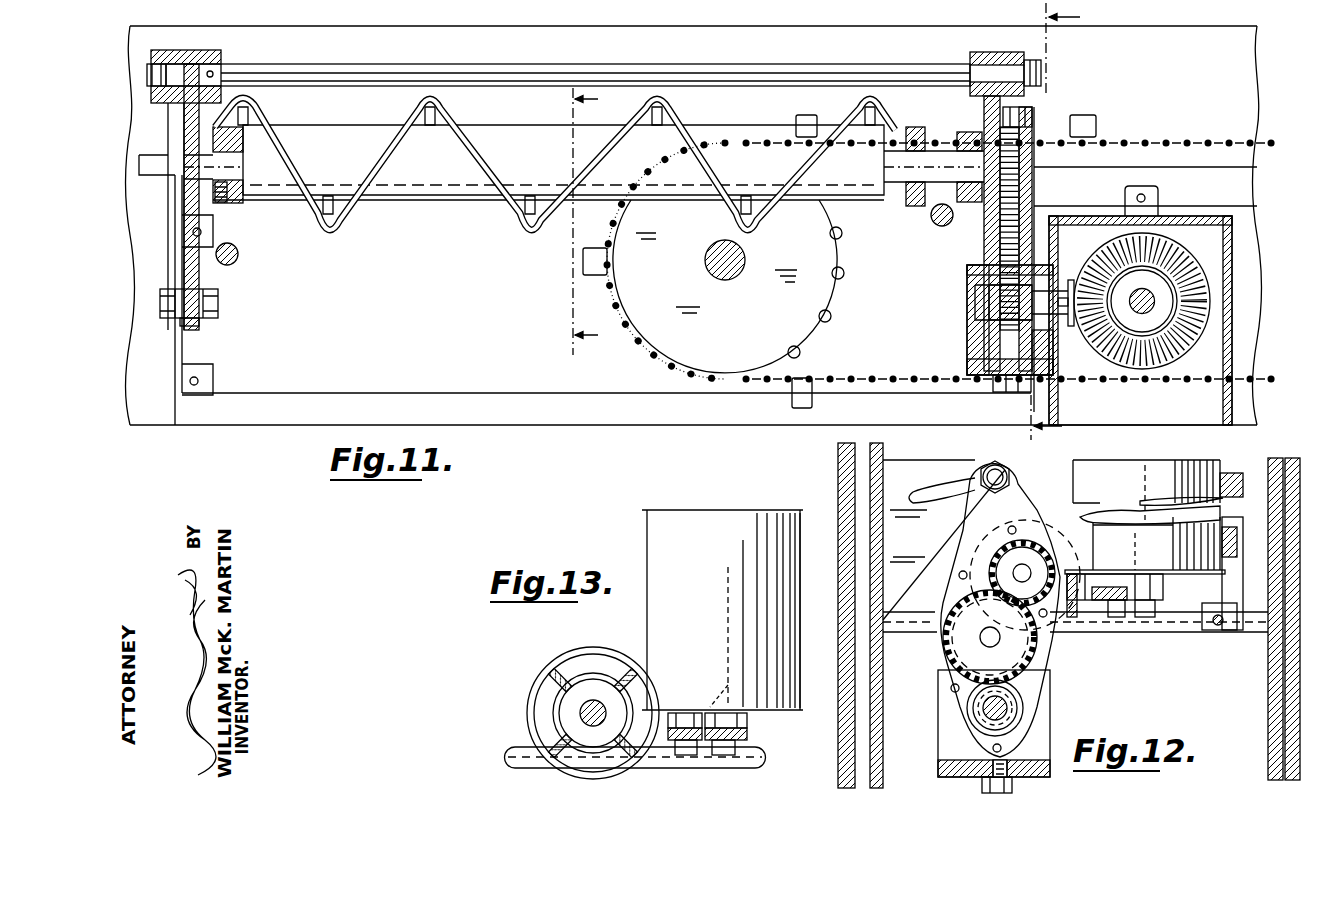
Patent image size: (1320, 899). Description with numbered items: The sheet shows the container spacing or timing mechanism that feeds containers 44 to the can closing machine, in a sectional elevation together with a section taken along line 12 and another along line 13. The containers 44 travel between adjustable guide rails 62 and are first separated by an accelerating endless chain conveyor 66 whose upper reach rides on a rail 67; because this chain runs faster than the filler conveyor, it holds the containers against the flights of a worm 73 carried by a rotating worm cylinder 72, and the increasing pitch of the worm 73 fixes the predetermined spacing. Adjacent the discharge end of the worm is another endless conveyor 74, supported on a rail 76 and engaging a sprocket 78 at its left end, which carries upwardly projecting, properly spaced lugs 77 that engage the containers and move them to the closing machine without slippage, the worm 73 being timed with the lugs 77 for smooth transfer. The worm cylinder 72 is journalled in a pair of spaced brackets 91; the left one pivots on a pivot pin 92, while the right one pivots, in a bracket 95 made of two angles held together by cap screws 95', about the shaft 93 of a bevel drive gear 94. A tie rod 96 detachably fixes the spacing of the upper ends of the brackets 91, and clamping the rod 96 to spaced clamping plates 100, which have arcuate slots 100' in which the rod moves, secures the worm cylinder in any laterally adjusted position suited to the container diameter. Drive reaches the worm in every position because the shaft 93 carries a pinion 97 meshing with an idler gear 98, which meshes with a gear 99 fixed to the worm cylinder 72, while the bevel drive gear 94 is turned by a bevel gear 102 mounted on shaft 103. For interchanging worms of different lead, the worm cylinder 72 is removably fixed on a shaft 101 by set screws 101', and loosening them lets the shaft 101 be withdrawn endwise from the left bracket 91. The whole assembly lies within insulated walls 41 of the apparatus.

In FIG. 11, the section line 12— 12 is at (1072, 223).
In FIG. 11, the section line 13— 13 is at (601, 224).
In FIG. 13, the insulated walls 41 is at (800, 667).
In FIG. 12, the insulated walls 41 is at (852, 660).
In FIG. 13, the containers 44 is at (712, 605).
In FIG. 12, the containers 44 is at (1148, 515).
In FIG. 12, the guide rails 62 is at (1236, 478).
In FIG. 13, the accelerating endless chain conveyor 66 is at (690, 715).
In FIG. 12, the accelerating endless chain conveyor 66 is at (1117, 600).
In FIG. 13, the rail 67 is at (688, 755).
In FIG. 12, the rail 67 is at (1127, 612).
In FIG. 11, the worm cylinder 72 is at (387, 130).
In FIG. 13, the worm cylinder 72 is at (555, 723).
In FIG. 11, the worm 73 is at (442, 108).
In FIG. 13, the worm 73 is at (540, 680).
In FIG. 11, the endless conveyor 74 is at (674, 377).
In FIG. 13, the endless conveyor 74 is at (742, 724).
In FIG. 12, the endless conveyor 74 is at (1163, 585).
In FIG. 13, the rail 76 is at (742, 733).
In FIG. 12, the rail 76 is at (1163, 593).
In FIG. 11, the lugs 77 is at (583, 257).
In FIG. 13, the lugs 77 is at (728, 687).
In FIG. 12, the lugs 77 is at (1135, 556).
In FIG. 11, the sprocket 78 is at (728, 286).
In FIG. 11, the brackets 91 is at (200, 282).
In FIG. 12, the brackets 91 is at (1050, 658).
In FIG. 11, the pivot pin 92 is at (190, 326).
In FIG. 11, the shaft 93 is at (1050, 294).
In FIG. 12, the shaft 93 is at (1010, 712).
In FIG. 11, the bevel drive gear 94 is at (1077, 328).
In FIG. 11, the bracket 95 is at (990, 320).
In FIG. 11, the cap screws 95' is at (1006, 398).
In FIG. 12, the cap screws 95' is at (990, 736).
In FIG. 11, the tie rod 96 is at (621, 64).
In FIG. 12, the tie rod 96 is at (1012, 478).
In FIG. 11, the pinion 97 is at (993, 306).
In FIG. 12, the pinion 97 is at (1018, 700).
In FIG. 11, the idler gear 98 is at (1015, 226).
In FIG. 12, the idler gear 98 is at (967, 645).
In FIG. 11, the gear 99 is at (1016, 134).
In FIG. 12, the gear 99 is at (1007, 558).
In FIG. 11, the clamping plates 100 is at (587, 177).
In FIG. 12, the clamping plates 100 is at (944, 545).
In FIG. 11, the arcuate slots 100' is at (242, 208).
In FIG. 12, the arcuate slots 100' is at (942, 468).
In FIG. 11, the shaft 101 is at (584, 166).
In FIG. 13, the shaft 101 is at (543, 713).
In FIG. 11, the set screws 101' is at (920, 217).
In FIG. 11, the bevel gear 102 is at (1184, 352).
In FIG. 11, the shaft 103 is at (1146, 311).